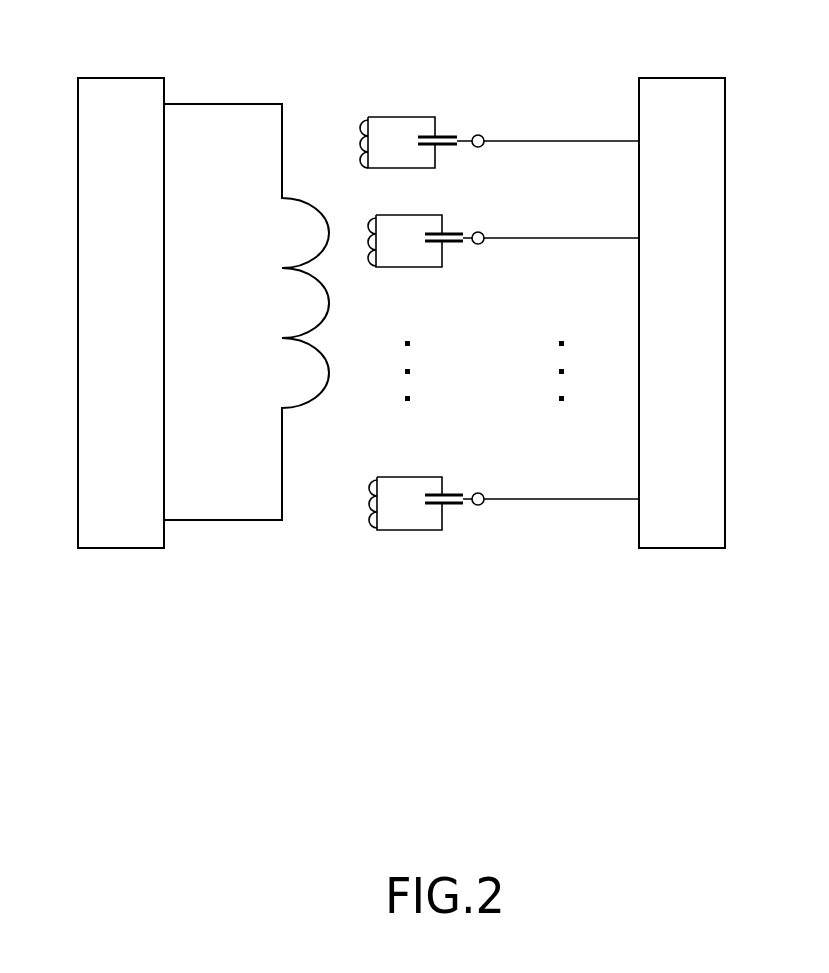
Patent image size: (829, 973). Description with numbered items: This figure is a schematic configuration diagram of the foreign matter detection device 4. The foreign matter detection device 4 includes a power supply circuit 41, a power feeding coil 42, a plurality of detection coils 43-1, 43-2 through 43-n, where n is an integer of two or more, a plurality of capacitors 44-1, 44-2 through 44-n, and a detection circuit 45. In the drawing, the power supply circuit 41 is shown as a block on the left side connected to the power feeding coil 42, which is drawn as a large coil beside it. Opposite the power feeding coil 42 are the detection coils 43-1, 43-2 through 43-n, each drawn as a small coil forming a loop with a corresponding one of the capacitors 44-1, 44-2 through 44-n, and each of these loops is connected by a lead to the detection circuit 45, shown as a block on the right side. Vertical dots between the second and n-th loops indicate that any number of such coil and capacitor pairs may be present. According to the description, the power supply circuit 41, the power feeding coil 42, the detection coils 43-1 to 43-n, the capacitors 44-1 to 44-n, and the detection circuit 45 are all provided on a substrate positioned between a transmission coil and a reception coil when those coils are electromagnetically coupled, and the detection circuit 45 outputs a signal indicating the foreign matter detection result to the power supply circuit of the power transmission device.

The foreign matter detection device 4 is at (667, 707).
The power supply circuit 41 is at (110, 548).
The power feeding coil 42 is at (318, 405).
The detection coil 43-1 is at (363, 120).
The detection coil 43-2 is at (369, 222).
The detection coil 43-n is at (370, 530).
The capacitor 44-1 is at (453, 130).
The capacitor 44-2 is at (454, 232).
The capacitor 44-n is at (458, 508).
The detection circuit 45 is at (695, 548).